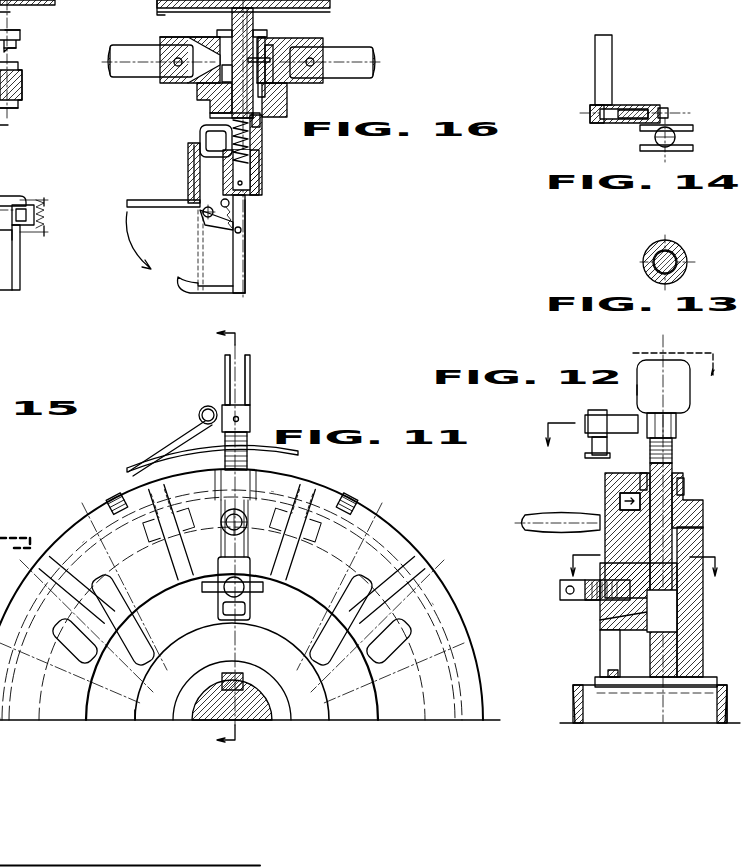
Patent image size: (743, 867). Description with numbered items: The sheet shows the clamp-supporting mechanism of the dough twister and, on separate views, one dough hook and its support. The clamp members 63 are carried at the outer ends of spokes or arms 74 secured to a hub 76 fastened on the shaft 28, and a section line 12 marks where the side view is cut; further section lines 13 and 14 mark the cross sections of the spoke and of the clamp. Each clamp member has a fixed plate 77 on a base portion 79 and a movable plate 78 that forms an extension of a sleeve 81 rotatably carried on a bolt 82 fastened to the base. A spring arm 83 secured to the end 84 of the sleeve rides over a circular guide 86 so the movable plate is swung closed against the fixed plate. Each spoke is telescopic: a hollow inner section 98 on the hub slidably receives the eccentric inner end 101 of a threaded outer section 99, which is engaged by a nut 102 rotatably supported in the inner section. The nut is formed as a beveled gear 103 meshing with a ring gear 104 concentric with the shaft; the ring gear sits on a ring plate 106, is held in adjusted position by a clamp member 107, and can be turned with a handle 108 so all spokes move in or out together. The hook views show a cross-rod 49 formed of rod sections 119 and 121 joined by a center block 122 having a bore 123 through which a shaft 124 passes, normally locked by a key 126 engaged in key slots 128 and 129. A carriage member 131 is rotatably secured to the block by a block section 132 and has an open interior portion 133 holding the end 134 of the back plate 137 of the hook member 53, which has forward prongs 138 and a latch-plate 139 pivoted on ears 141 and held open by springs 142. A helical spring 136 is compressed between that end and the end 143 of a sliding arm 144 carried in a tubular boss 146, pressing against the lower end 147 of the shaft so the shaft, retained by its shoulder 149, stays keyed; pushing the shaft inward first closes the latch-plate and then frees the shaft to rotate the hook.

In FIG. 11, the section line 12— 12 is at (237, 534).
In FIG. 12, the section line 13— 13 is at (649, 556).
In FIG. 12, the section line 14— 14 is at (632, 391).
In FIG. 12, the shaft 28 is at (590, 705).
In FIG. 11, the shaft 28 is at (265, 728).
In FIG. 16, the cross-rod 49 is at (158, 72).
In FIG. 15, the cross-rod 49 is at (12, 52).
In FIG. 16, the hook member 53 is at (251, 275).
In FIG. 15, the hook member 53 is at (26, 288).
In FIG. 14, the clamp member 63 is at (642, 150).
In FIG. 12, the clamp member 63 is at (645, 393).
In FIG. 11, the clamp member 63 is at (256, 382).
In FIG. 14, the spoke or arm 74 is at (675, 136).
In FIG. 12, the spoke or arm 74 is at (683, 461).
In FIG. 11, the spoke or arm 74 is at (259, 450).
In FIG. 12, the hub 76 is at (605, 675).
In FIG. 11, the hub 76 is at (294, 684).
In FIG. 14, the fixed clamp plate 77 is at (688, 148).
In FIG. 12, the fixed clamp plate 77 is at (690, 398).
In FIG. 11, the fixed clamp plate 77 is at (247, 397).
In FIG. 14, the movable clamp plate 78 is at (672, 126).
In FIG. 11, the movable clamp plate 78 is at (225, 378).
In FIG. 12, the base portion 79 is at (677, 432).
In FIG. 11, the base portion 79 is at (250, 418).
In FIG. 14, the sleeve 81 is at (628, 104).
In FIG. 12, the sleeve 81 is at (625, 432).
In FIG. 14, the bolt 82 is at (645, 108).
In FIG. 12, the spring arm 83 is at (594, 449).
In FIG. 11, the spring arm 83 is at (186, 438).
In FIG. 14, the end of sleeve 84 is at (600, 124).
In FIG. 12, the end of sleeve 84 is at (590, 416).
In FIG. 12, the circular guide 86 is at (602, 458).
In FIG. 11, the circular guide 86 is at (136, 456).
In FIG. 12, the inner telescopic spoke section 98 is at (640, 610).
In FIG. 13, the outer telescopic spoke section 99 is at (655, 262).
In FIG. 12, the outer telescopic spoke section 99 is at (672, 487).
In FIG. 13, the inner end of outer section 101 is at (676, 254).
In FIG. 12, the inner end of outer section 101 is at (690, 595).
In FIG. 12, the nut 102 is at (620, 510).
In FIG. 12, the beveled gear 103 is at (642, 474).
In FIG. 11, the beveled gear 103 is at (325, 503).
In FIG. 12, the ring gear 104 is at (610, 483).
In FIG. 11, the ring gear 104 is at (418, 560).
In FIG. 12, the ring plate 106 is at (625, 630).
In FIG. 11, the ring plate 106 is at (138, 716).
In FIG. 12, the clamp member 107 is at (562, 598).
In FIG. 11, the clamp member 107 is at (240, 620).
In FIG. 12, the handle 108 is at (543, 532).
In FIG. 11, the handle 108 is at (224, 528).
In FIG. 16, the rod section 119 is at (122, 70).
In FIG. 16, the rod section 121 is at (355, 72).
In FIG. 16, the center block 122 is at (300, 46).
In FIG. 15, the center block 122 is at (18, 40).
In FIG. 16, the bore 123 is at (226, 34).
In FIG. 16, the shaft 124 is at (258, 30).
In FIG. 15, the shaft 124 is at (8, 15).
In FIG. 16, the key 126 is at (287, 100).
In FIG. 16, the key slot 128 is at (195, 88).
In FIG. 16, the key slot 129 is at (262, 52).
In FIG. 16, the carriage member 131 is at (262, 165).
In FIG. 16, the block section 132 is at (200, 95).
In FIG. 15, the block section 132 is at (5, 112).
In FIG. 16, the open interior portion 133 is at (255, 152).
In FIG. 16, the end of hook backing plate 134 is at (260, 190).
In FIG. 16, the helical spring 136 is at (202, 128).
In FIG. 16, the back plate 137 is at (245, 243).
In FIG. 15, the back plate 137 is at (20, 266).
In FIG. 16, the prong 138 is at (217, 290).
In FIG. 16, the latch-plate 139 is at (157, 200).
In FIG. 15, the latch-plate 139 is at (0, 192).
In FIG. 16, the ear 141 is at (215, 225).
In FIG. 16, the spring 142 is at (232, 210).
In FIG. 15, the spring 142 is at (48, 220).
In FIG. 16, the end of sliding arm 143 is at (258, 127).
In FIG. 16, the sliding arm 144 is at (190, 145).
In FIG. 15, the sliding arm 144 is at (14, 136).
In FIG. 16, the tubular boss 146 is at (190, 162).
In FIG. 16, the lower end of shaft 147 is at (228, 114).
In FIG. 16, the shoulder 149 is at (200, 42).